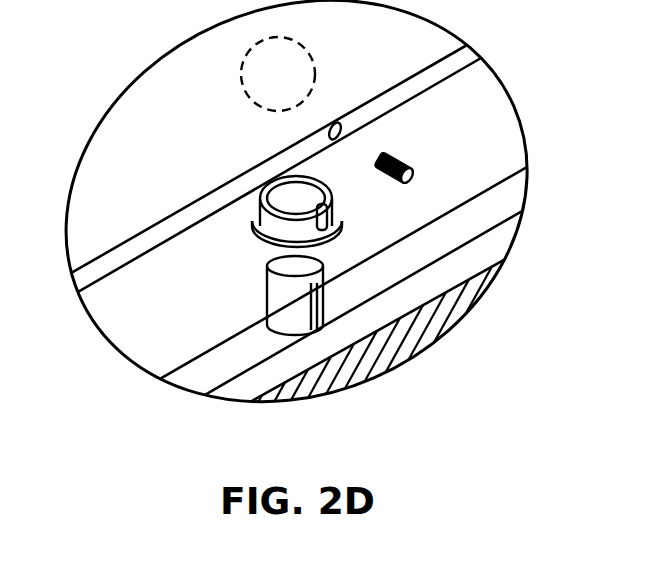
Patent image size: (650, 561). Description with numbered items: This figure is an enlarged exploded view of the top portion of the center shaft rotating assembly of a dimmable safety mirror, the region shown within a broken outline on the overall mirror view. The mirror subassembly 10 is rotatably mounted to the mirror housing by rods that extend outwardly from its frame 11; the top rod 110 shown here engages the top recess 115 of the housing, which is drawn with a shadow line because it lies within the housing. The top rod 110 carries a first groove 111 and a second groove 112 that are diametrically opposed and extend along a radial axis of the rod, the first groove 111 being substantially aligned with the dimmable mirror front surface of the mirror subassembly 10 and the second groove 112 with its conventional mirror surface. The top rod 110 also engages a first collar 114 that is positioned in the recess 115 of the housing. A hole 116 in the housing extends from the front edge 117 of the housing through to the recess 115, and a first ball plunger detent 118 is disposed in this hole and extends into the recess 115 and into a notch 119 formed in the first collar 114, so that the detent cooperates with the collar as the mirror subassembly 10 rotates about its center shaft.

The mirror subassembly 10 is at (450, 316).
The frame 11 is at (457, 247).
The top rod 110 is at (267, 297).
The first groove 111 is at (318, 296).
The second groove 112 is at (290, 256).
The first collar 114 is at (262, 204).
The top recess 115 is at (243, 93).
The hole 116 is at (337, 122).
The front edge 117 is at (81, 279).
The first ball plunger detent 118 is at (402, 154).
The notch 119 is at (330, 220).